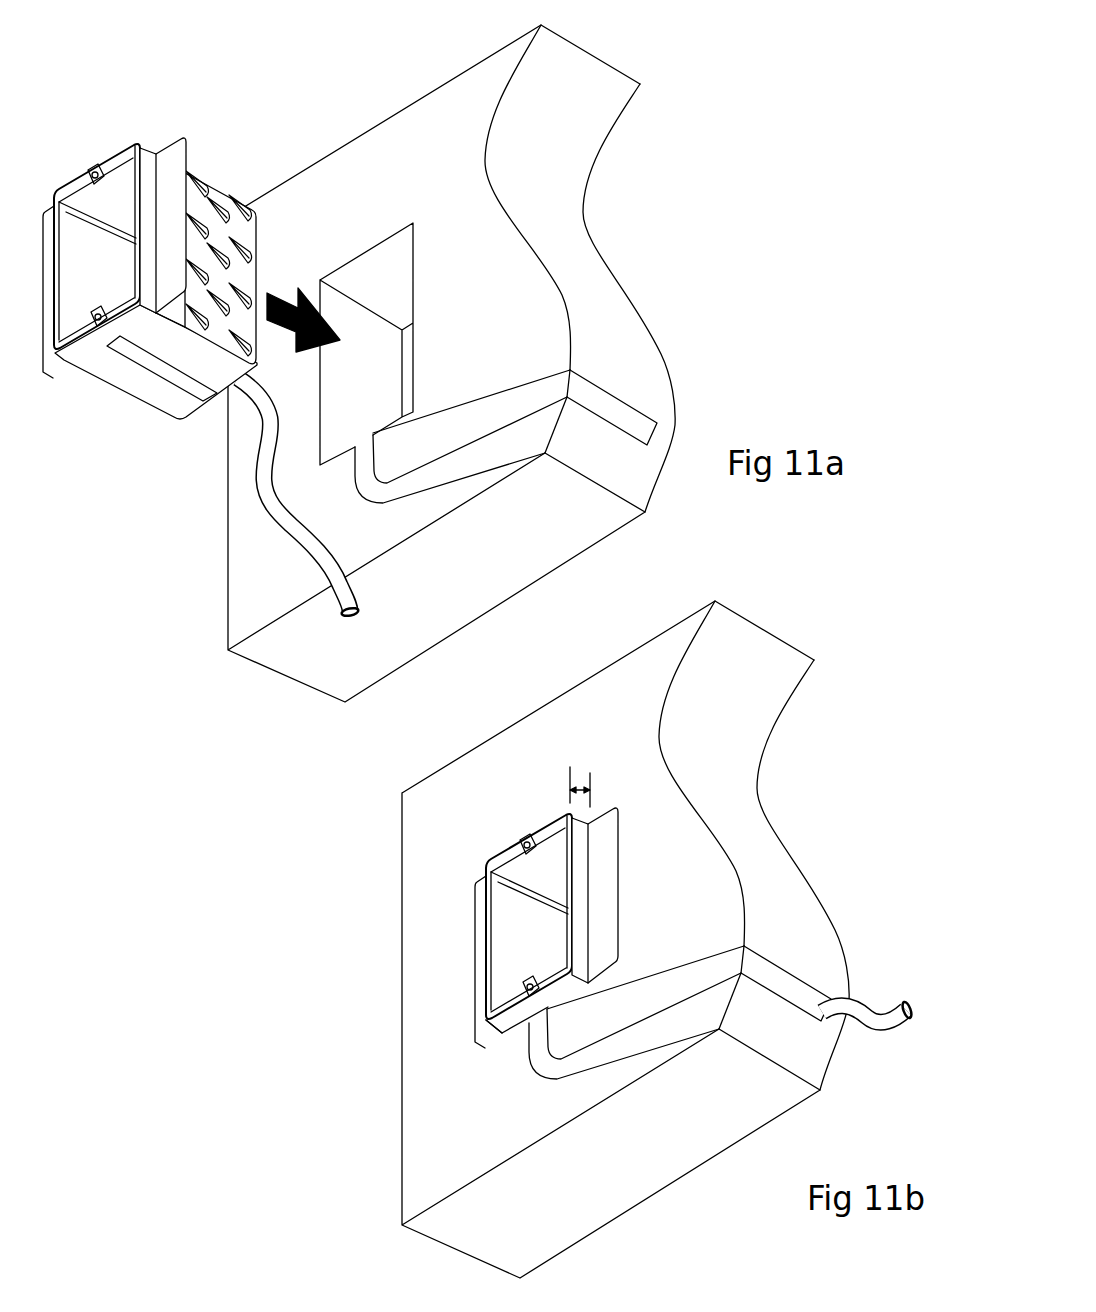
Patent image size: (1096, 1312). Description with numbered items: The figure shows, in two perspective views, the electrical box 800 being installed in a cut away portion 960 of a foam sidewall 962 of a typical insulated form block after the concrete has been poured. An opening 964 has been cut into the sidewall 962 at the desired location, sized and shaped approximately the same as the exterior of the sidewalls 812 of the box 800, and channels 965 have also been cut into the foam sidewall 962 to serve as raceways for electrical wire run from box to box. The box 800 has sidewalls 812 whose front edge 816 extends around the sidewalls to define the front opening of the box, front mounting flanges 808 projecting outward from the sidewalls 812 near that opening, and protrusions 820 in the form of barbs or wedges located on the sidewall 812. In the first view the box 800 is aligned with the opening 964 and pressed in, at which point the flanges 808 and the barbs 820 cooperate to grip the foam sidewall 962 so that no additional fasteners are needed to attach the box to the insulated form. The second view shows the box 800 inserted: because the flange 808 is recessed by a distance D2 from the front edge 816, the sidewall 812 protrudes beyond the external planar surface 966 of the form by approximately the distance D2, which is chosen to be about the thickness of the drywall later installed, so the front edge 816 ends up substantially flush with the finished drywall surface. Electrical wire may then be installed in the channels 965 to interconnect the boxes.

In FIG. 11A, the electrical box 800 is at (156, 253).
In FIG. 11B, the electrical box 800 is at (552, 910).
In FIG. 11A, the front mounting flange 808 is at (175, 148).
In FIG. 11B, the front mounting flange 808 is at (603, 905).
In FIG. 11A, the sidewall 812 is at (150, 387).
In FIG. 11B, the sidewall 812 is at (532, 1008).
In FIG. 11B, the front edge 816 is at (527, 843).
In FIG. 11A, the protrusion 820 is at (193, 172).
In FIG. 11A, the cut away portion 960 is at (633, 60).
In FIG. 11A, the sidewall 962 is at (573, 248).
In FIG. 11A, the opening 964 is at (393, 285).
In FIG. 11A, the channel 965 is at (495, 427).
In FIG. 11B, the channel 965 is at (663, 1000).
In FIG. 11B, the external planar surface 966 is at (415, 1075).
In FIG. 11B, the distance D2 is at (584, 786).